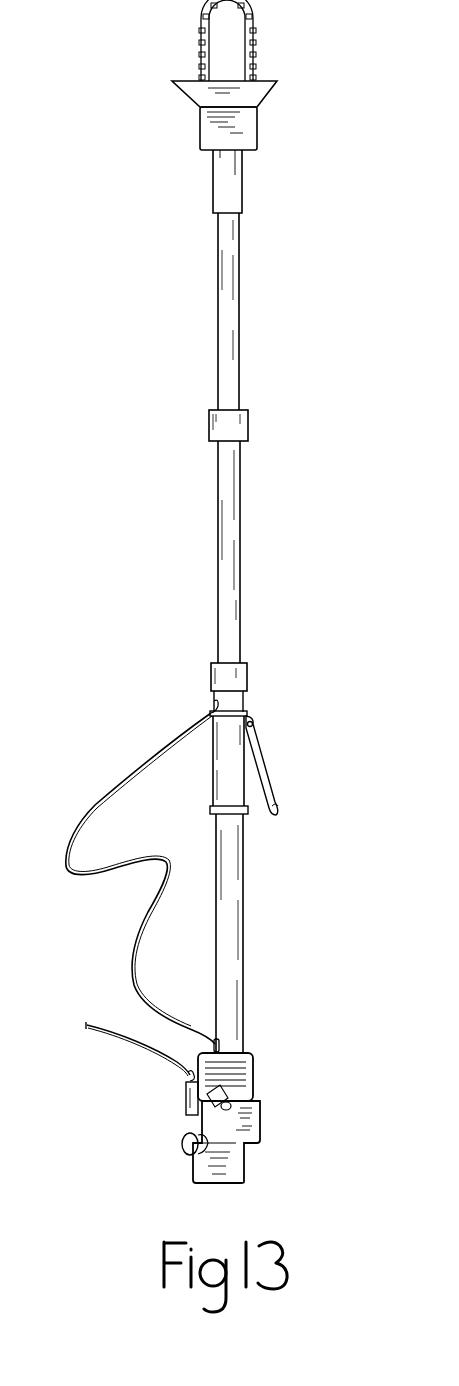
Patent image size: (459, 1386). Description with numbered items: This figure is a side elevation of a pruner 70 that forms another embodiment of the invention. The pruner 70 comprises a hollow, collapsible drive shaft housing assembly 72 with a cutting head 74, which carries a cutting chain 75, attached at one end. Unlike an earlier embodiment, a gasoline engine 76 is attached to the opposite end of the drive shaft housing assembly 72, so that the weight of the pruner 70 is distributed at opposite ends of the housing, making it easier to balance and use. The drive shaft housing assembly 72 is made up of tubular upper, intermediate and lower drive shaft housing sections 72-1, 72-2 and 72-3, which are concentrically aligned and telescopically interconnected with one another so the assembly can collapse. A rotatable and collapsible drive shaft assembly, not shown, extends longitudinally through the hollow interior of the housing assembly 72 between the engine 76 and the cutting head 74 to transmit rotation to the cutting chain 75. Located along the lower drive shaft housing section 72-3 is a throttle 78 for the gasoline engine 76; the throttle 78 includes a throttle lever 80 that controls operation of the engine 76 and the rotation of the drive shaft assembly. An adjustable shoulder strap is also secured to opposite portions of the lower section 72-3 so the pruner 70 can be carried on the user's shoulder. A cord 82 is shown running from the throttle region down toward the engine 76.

The pruner 70 is at (262, 539).
The drive shaft housing assembly 72 is at (241, 631).
The upper drive shaft housing section 72-1 is at (239, 277).
The intermediate drive shaft housing section 72-2 is at (222, 541).
The lower drive shaft housing section 72-3 is at (243, 920).
The cutting head 74 is at (247, 133).
The cutting chain 75 is at (253, 31).
The gasoline engine 76 is at (250, 1078).
The throttle 78 is at (223, 768).
The throttle lever 80 is at (263, 762).
The cord 82 is at (148, 910).